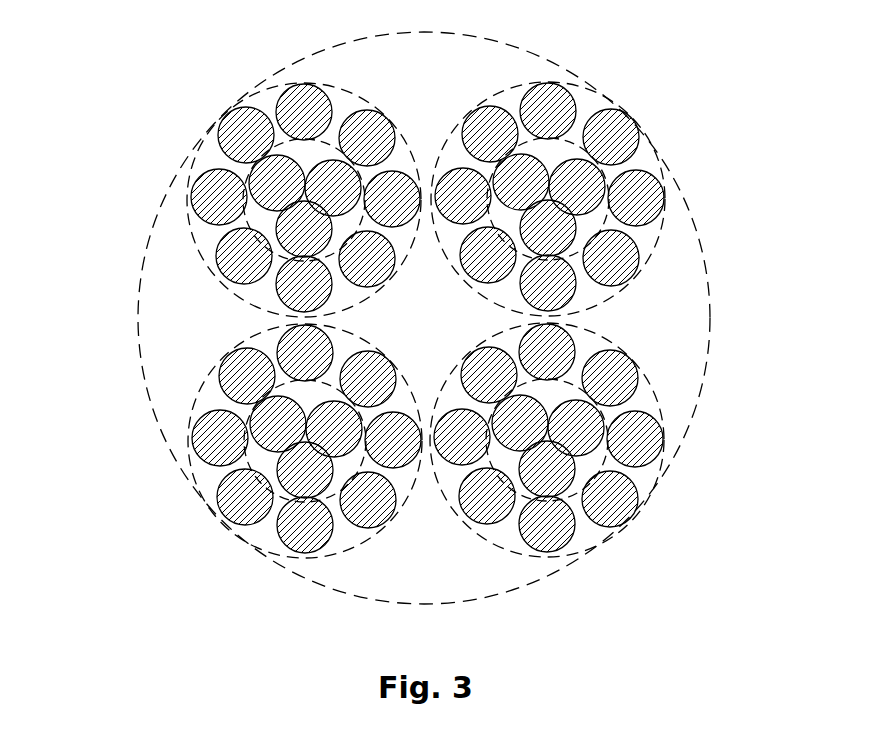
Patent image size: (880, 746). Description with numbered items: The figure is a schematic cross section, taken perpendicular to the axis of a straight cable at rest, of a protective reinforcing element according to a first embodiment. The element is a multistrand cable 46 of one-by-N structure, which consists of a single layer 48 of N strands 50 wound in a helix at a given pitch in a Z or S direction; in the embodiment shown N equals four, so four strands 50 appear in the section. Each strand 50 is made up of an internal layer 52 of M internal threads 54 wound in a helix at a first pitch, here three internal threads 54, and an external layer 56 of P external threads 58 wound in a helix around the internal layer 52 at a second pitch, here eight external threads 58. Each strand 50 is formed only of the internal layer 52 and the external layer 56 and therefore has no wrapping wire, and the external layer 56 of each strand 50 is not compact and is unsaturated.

The multistrand cable 46 is at (150, 58).
The single layer 48 is at (395, 72).
The strand 50 is at (182, 242).
The internal layer 52 is at (243, 413).
The internal thread 54 is at (287, 490).
The external layer 56 is at (648, 152).
The external thread 58 is at (647, 200).